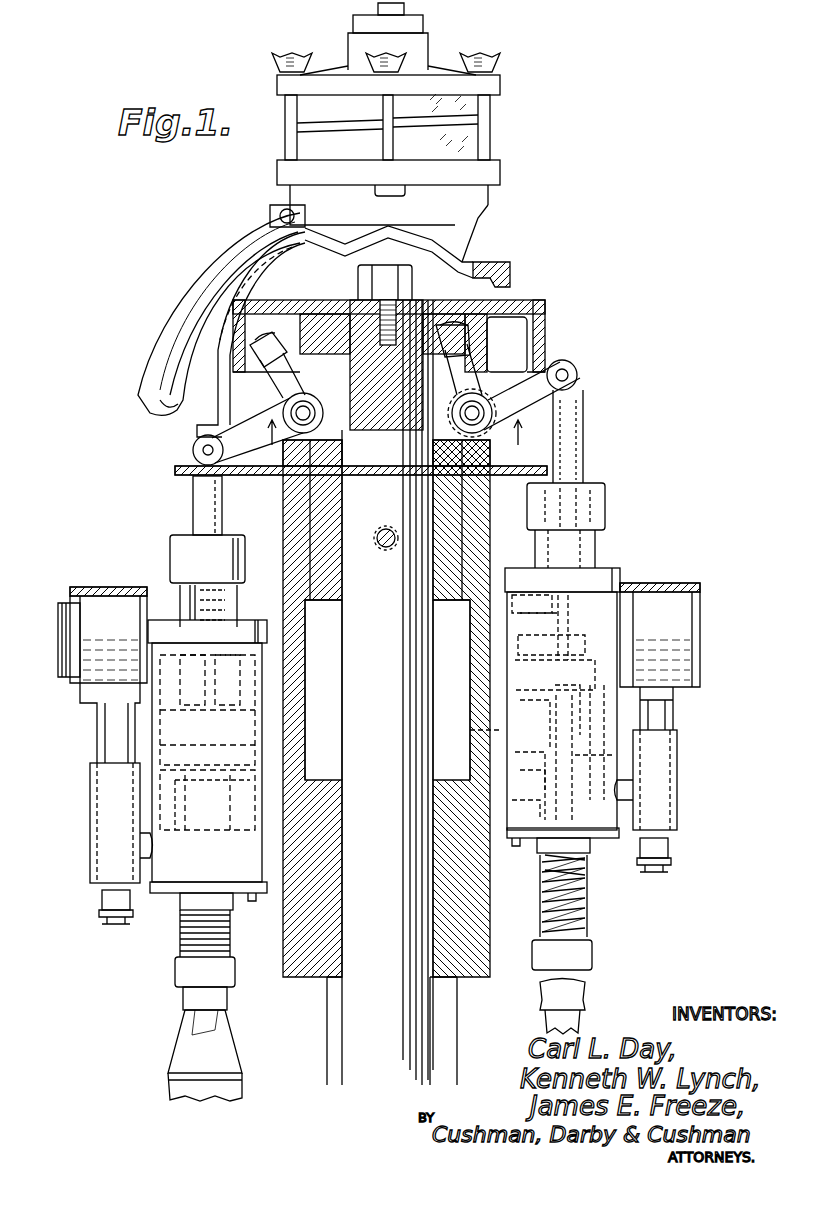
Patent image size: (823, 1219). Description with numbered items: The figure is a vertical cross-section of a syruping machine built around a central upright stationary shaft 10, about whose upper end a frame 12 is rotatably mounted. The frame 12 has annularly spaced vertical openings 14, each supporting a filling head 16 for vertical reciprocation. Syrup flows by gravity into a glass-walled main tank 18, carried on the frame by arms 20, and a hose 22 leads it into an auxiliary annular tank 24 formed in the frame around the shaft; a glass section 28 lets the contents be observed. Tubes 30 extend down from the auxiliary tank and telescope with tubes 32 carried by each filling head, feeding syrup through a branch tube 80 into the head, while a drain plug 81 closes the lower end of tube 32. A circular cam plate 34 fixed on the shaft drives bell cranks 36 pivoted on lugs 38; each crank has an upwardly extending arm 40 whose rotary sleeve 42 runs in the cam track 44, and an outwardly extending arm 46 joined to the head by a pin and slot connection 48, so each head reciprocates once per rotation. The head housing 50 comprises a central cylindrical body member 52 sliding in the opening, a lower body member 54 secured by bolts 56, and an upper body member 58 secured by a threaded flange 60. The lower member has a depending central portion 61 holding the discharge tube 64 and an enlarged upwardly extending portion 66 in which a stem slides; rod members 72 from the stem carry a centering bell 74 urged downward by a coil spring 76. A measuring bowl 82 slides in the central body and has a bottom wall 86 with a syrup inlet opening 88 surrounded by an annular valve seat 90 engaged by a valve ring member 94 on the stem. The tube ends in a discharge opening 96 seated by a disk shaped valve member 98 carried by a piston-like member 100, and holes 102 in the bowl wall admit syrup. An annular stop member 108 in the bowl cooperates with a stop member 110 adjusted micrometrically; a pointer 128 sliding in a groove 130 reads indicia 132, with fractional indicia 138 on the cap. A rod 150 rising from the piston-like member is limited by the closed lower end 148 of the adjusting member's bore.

The central upright stationary shaft 10 is at (410, 688).
The frame 12 is at (478, 545).
The openings 14 is at (475, 618).
The filling head 16 is at (619, 519).
The main tank 18 is at (460, 150).
The arms 20 is at (487, 242).
The hose 22 is at (140, 310).
The auxiliary annular tank 24 is at (690, 612).
The glass section 28 is at (60, 650).
The tubes 30 is at (673, 710).
The tubes 32 is at (677, 758).
The circular cam plate 34 is at (545, 305).
The bell cranks 36 is at (388, 443).
The lugs 38 is at (285, 476).
The upwardly extending arm 40 is at (452, 377).
The rotary sleeve 42 is at (278, 335).
The cam track 44 is at (484, 338).
The outwardly extending arm 46 is at (262, 418).
The pin and slot connection 48 is at (193, 447).
The housing 50 is at (622, 565).
The central cylindrical body member 52 is at (262, 712).
The lower body member 54 is at (600, 838).
The bolts 56 is at (514, 846).
The upper body member 58 is at (535, 550).
The threaded flange 60 is at (387, 603).
The depending central portion 61 is at (185, 905).
The discharge tube 64 is at (205, 770).
The enlarged upwardly extending portion 66 is at (515, 797).
The rod members 72 is at (542, 905).
The centering bell 74 is at (592, 957).
The coil spring 76 is at (575, 898).
The branch tube 80 is at (640, 795).
The drain plug 81 is at (670, 852).
The measuring bowl 82 is at (490, 745).
The bottom wall 86 is at (535, 725).
The syrup inlet opening 88 is at (593, 743).
The annular valve seat 90 is at (531, 762).
The valve ring member 94 is at (513, 795).
The discharge opening 96 is at (551, 757).
The disk shaped valve member 98 is at (554, 707).
The piston-like member 100 is at (595, 742).
The holes 102 is at (555, 675).
The annular stop member 108 is at (550, 638).
The stop member 110 is at (531, 602).
The pointer 128 is at (185, 595).
The groove 130 is at (190, 608).
The indicia 132 is at (219, 605).
The indicia 138 is at (232, 582).
The closed lower end 148 is at (536, 615).
The rod 150 is at (572, 622).